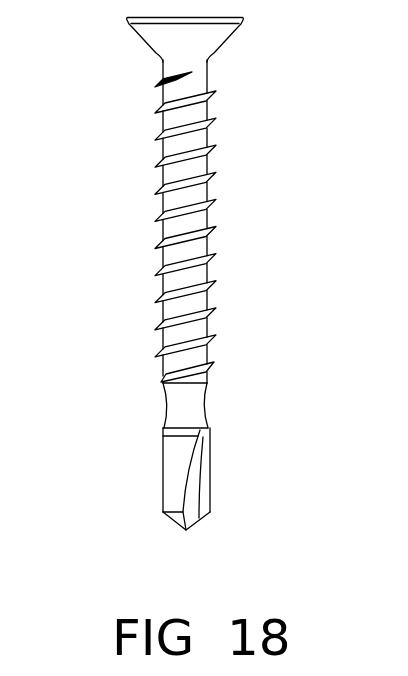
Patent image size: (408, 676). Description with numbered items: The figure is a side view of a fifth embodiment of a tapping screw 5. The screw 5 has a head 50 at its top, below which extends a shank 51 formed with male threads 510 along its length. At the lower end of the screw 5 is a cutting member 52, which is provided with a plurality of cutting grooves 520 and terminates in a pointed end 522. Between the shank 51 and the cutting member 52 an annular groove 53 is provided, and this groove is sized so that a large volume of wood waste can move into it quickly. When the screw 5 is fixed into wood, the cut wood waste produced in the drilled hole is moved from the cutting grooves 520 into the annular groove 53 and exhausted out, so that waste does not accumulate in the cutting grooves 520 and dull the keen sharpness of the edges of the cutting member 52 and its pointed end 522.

The screw 5 is at (110, 147).
The head 50 is at (141, 39).
The shank 51 is at (173, 230).
The male threads 510 is at (217, 168).
The annular groove 53 is at (170, 408).
The cutting member 52 is at (167, 495).
The cutting grooves 520 is at (203, 498).
The drill point 522 is at (188, 532).